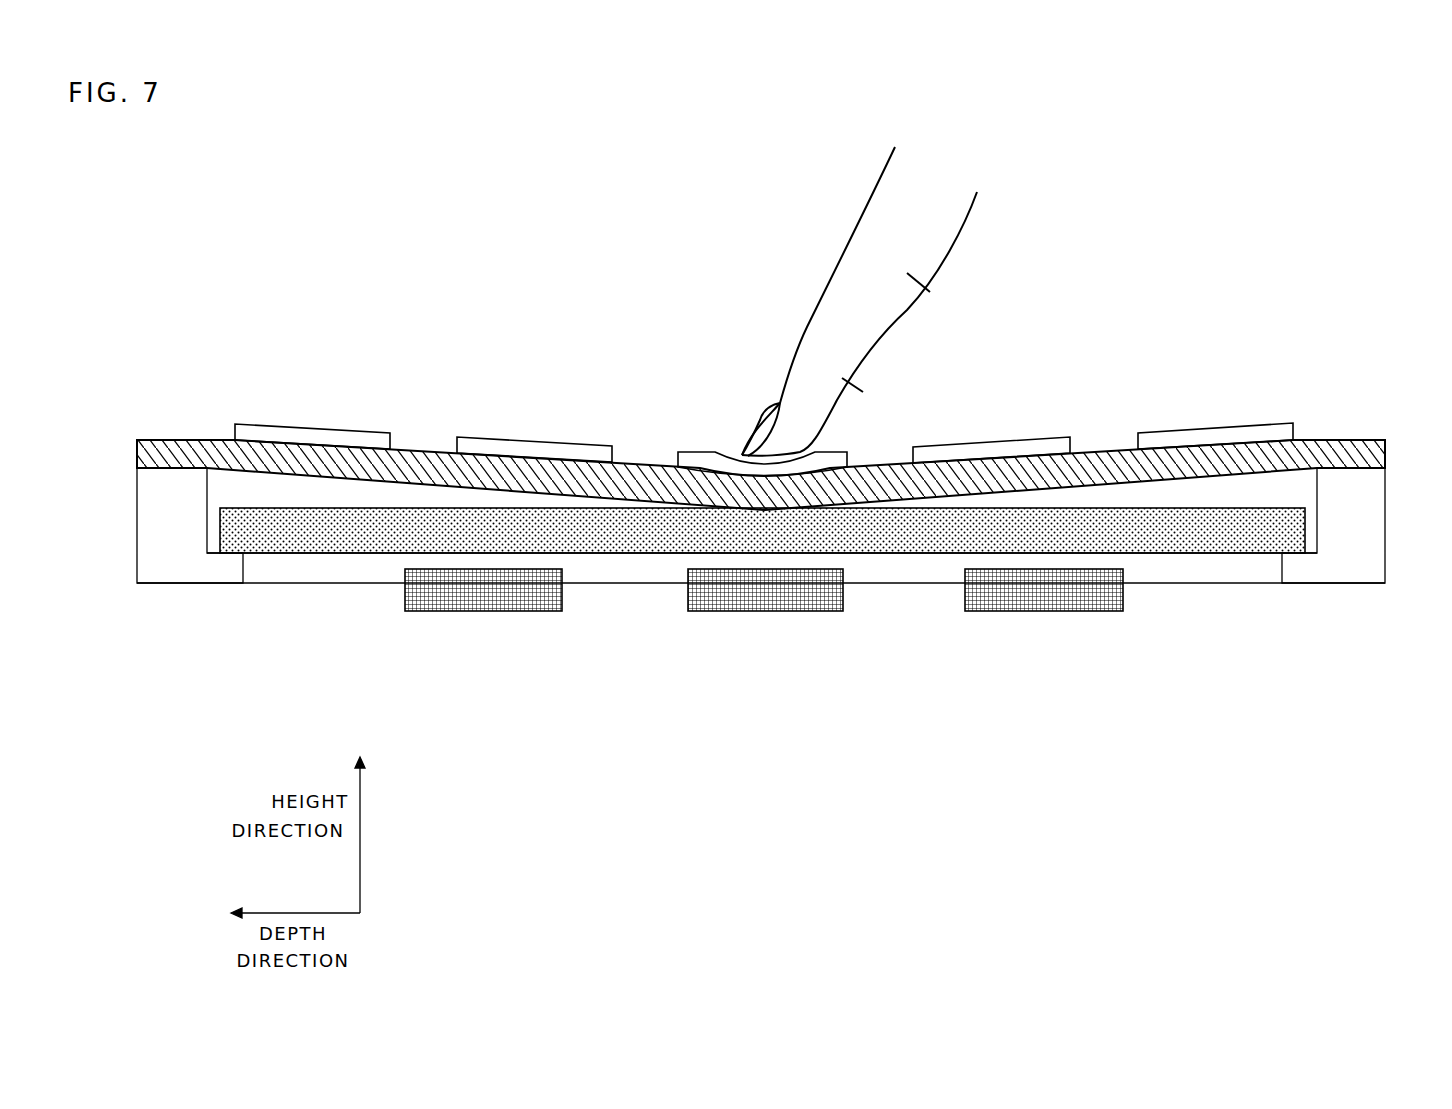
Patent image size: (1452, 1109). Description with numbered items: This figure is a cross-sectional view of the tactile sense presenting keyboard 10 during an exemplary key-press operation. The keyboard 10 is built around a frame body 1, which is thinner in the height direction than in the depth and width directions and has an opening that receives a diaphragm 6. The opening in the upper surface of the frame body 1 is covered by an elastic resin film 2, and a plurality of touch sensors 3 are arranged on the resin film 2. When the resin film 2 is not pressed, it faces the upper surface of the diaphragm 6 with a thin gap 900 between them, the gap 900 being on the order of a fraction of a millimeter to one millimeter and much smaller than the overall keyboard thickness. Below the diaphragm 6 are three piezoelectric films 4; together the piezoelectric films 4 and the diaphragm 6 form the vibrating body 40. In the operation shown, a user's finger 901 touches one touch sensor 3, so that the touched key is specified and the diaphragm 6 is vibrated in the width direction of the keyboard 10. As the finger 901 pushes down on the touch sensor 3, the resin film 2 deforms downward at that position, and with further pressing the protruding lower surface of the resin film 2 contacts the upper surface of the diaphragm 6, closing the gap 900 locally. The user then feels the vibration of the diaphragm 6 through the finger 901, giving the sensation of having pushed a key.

The frame body 1 is at (173, 538).
The elastic resin film 2 is at (1353, 437).
The touch sensor 3 is at (330, 427).
The piezoelectric film 4 is at (495, 612).
The diaphragm 6 is at (1215, 556).
The tactile sense presenting keyboard 10 is at (1210, 217).
The vibrating body 40 is at (761, 730).
The gap 900 is at (357, 503).
The finger 901 is at (873, 333).